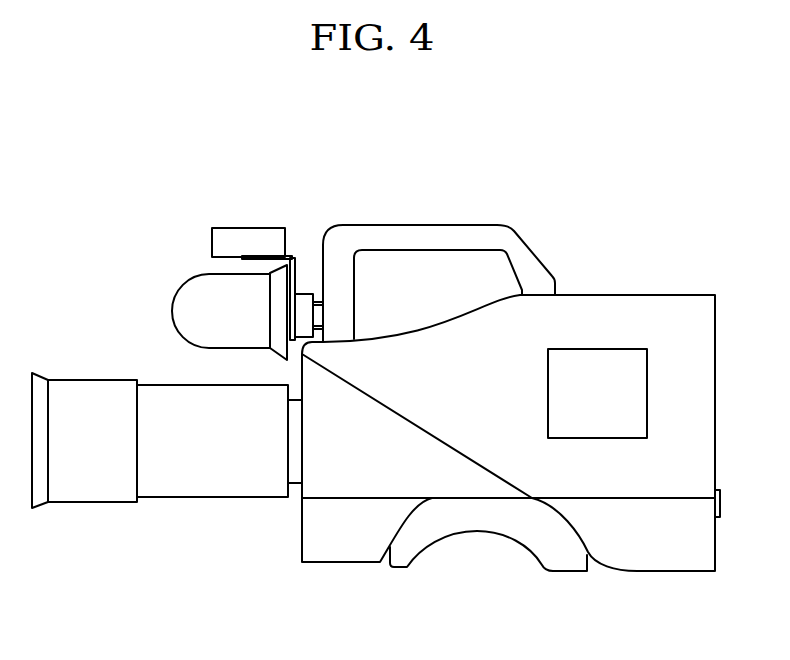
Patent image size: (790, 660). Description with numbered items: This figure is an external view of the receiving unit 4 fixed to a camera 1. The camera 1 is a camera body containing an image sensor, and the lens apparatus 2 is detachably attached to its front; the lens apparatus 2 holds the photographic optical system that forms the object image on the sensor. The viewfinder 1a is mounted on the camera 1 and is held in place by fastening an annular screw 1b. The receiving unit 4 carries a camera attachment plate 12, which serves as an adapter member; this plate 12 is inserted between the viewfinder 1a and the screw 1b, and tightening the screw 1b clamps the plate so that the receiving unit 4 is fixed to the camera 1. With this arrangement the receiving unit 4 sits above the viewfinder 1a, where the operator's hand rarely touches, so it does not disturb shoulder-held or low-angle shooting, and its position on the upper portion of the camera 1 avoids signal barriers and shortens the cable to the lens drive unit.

The camera 1 is at (607, 308).
The viewfinder 1a is at (172, 308).
The annular screw 1b is at (307, 315).
The lens apparatus 2 is at (215, 485).
The receiving unit 4 is at (249, 239).
The camera attachment plate 12 is at (293, 257).